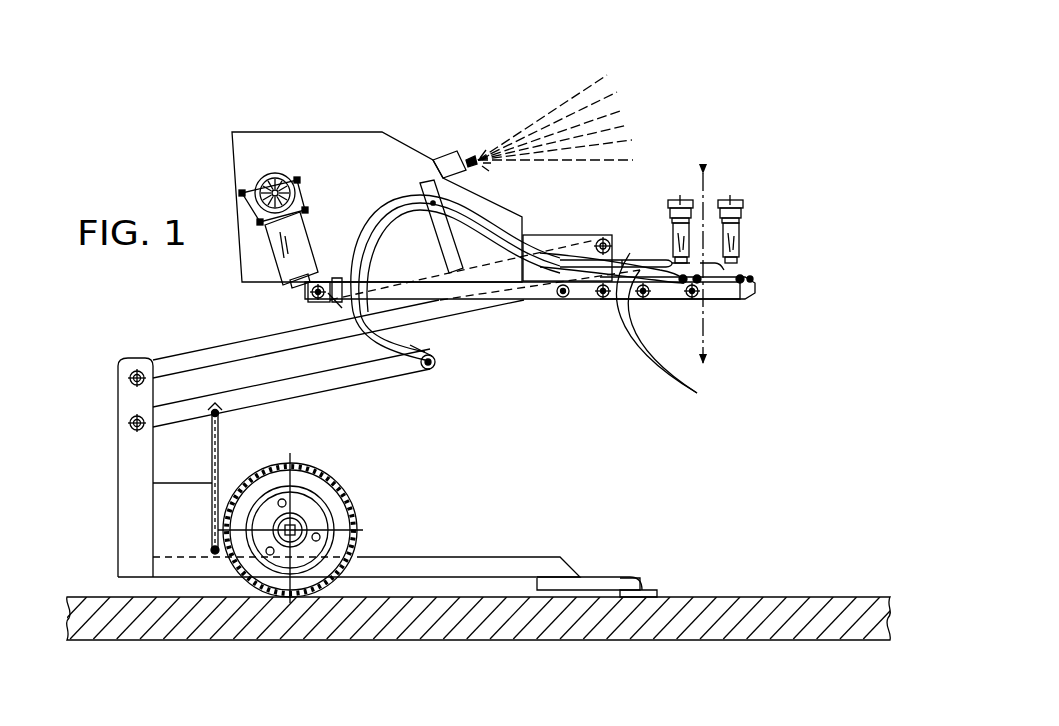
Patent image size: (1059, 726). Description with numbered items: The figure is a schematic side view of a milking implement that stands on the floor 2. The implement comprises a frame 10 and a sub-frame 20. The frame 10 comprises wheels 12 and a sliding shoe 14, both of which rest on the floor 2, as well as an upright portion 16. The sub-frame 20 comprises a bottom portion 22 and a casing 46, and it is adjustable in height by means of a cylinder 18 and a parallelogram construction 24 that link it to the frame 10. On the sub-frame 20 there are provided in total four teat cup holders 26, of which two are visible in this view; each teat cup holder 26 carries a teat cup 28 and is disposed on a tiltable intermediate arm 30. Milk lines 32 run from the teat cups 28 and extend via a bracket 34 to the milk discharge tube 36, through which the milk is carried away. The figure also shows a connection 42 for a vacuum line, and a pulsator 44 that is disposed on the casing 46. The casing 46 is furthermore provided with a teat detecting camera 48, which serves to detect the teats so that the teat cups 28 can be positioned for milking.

The floor 2 is at (428, 613).
The frame 10 is at (433, 568).
The wheels 12 is at (340, 512).
The sliding shoe 14 is at (645, 593).
The upright portion 16 is at (137, 475).
The cylinder 18 is at (213, 473).
The sub-frame 20 is at (220, 165).
The bottom portion 22 is at (510, 290).
The parallelogram construction 24 is at (278, 338).
The teat cup holders 26 is at (735, 280).
The teat cup 28 is at (733, 228).
The tiltable intermediate arm 30 is at (723, 293).
The milk lines 32 is at (672, 291).
The bracket 34 is at (317, 147).
The milk discharge tube 36 is at (427, 367).
The connection for a vacuum line 42 is at (293, 258).
The pulsator 44 is at (273, 175).
The casing 46 is at (403, 200).
The teat detecting camera 48 is at (447, 167).